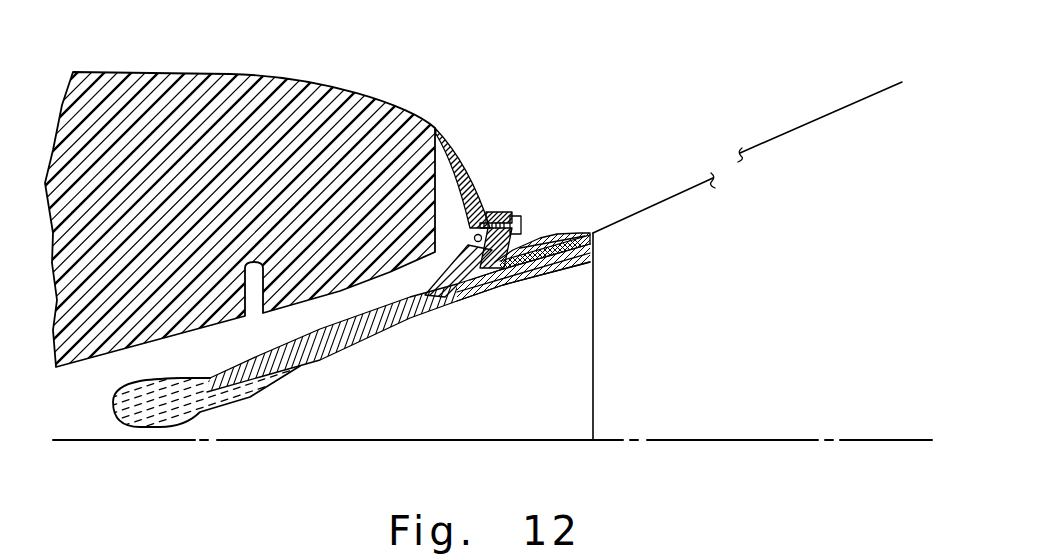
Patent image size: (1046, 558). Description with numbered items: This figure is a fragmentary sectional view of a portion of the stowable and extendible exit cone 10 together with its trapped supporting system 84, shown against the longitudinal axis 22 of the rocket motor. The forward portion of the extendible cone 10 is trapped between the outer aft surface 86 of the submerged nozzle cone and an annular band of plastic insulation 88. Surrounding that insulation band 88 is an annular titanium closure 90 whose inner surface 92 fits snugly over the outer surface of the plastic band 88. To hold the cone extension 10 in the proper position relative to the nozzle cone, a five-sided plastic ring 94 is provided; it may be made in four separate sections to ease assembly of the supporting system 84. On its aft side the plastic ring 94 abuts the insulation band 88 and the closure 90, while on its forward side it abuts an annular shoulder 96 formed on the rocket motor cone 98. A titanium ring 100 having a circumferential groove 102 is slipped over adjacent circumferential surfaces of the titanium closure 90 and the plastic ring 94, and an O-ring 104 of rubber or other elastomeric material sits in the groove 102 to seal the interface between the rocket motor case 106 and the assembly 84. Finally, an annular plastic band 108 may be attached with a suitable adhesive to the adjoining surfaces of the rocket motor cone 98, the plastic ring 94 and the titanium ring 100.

The extendible nozzle exit cone 10 is at (793, 117).
The longitudinal axis 22 is at (527, 438).
The trapped supporting system 84 is at (523, 182).
The outer aft surface 86 is at (586, 233).
The annular band of plastic insulation 88 is at (567, 235).
The annular titanium closure 90 is at (535, 240).
The inner surface 92 is at (536, 257).
The five-sided plastic ring 94 is at (480, 291).
The annular shoulder 96 is at (455, 302).
The rocket motor cone 98 is at (345, 330).
The titanium ring 100 is at (497, 271).
The circumferential groove 102 is at (470, 240).
The O-ring 104 is at (470, 225).
The rocket motor case 106 is at (458, 155).
The annular plastic band 108 is at (440, 272).